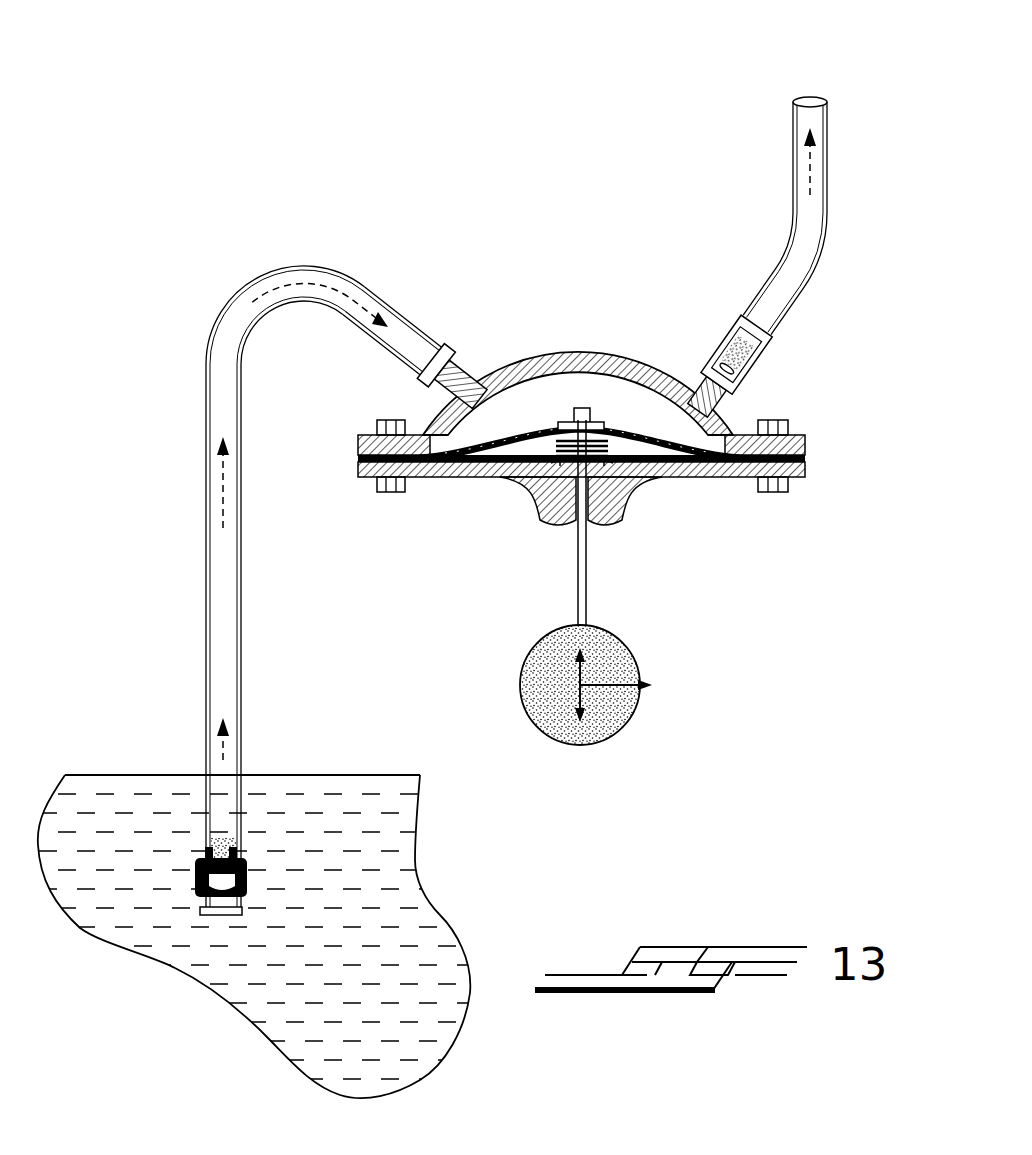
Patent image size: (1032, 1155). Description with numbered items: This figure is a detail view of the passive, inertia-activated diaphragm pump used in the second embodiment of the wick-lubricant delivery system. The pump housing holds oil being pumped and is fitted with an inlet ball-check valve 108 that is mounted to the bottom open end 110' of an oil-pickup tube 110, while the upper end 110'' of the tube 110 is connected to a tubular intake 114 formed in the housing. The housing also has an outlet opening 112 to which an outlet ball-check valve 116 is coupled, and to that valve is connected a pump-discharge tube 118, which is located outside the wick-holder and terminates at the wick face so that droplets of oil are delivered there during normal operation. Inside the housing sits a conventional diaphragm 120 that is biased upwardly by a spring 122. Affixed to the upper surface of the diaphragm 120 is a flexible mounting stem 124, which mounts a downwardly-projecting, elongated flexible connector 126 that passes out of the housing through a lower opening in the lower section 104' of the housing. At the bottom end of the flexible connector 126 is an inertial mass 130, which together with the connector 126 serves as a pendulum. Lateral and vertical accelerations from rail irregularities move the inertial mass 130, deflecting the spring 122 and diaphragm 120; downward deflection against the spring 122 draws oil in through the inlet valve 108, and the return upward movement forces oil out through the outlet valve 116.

The lower section of the housing 104' is at (581, 492).
The inlet ball-check valve 108 is at (213, 905).
The oil-pickup tube 110 is at (262, 566).
The bottom open end of the oil-pickup tube 110' is at (272, 807).
The upper end of the oil-pickup tube 110'' is at (363, 379).
The outlet opening 112 is at (672, 372).
The tubular intake 114 is at (458, 357).
The outlet ball-check valve 116 is at (762, 340).
The pump-discharge tube 118 is at (818, 115).
The diaphragm 120 is at (517, 430).
The spring 122 is at (550, 520).
The flexible mounting stem 124 is at (575, 415).
The flexible connector 126 is at (573, 548).
The inertial mass 130 is at (541, 735).